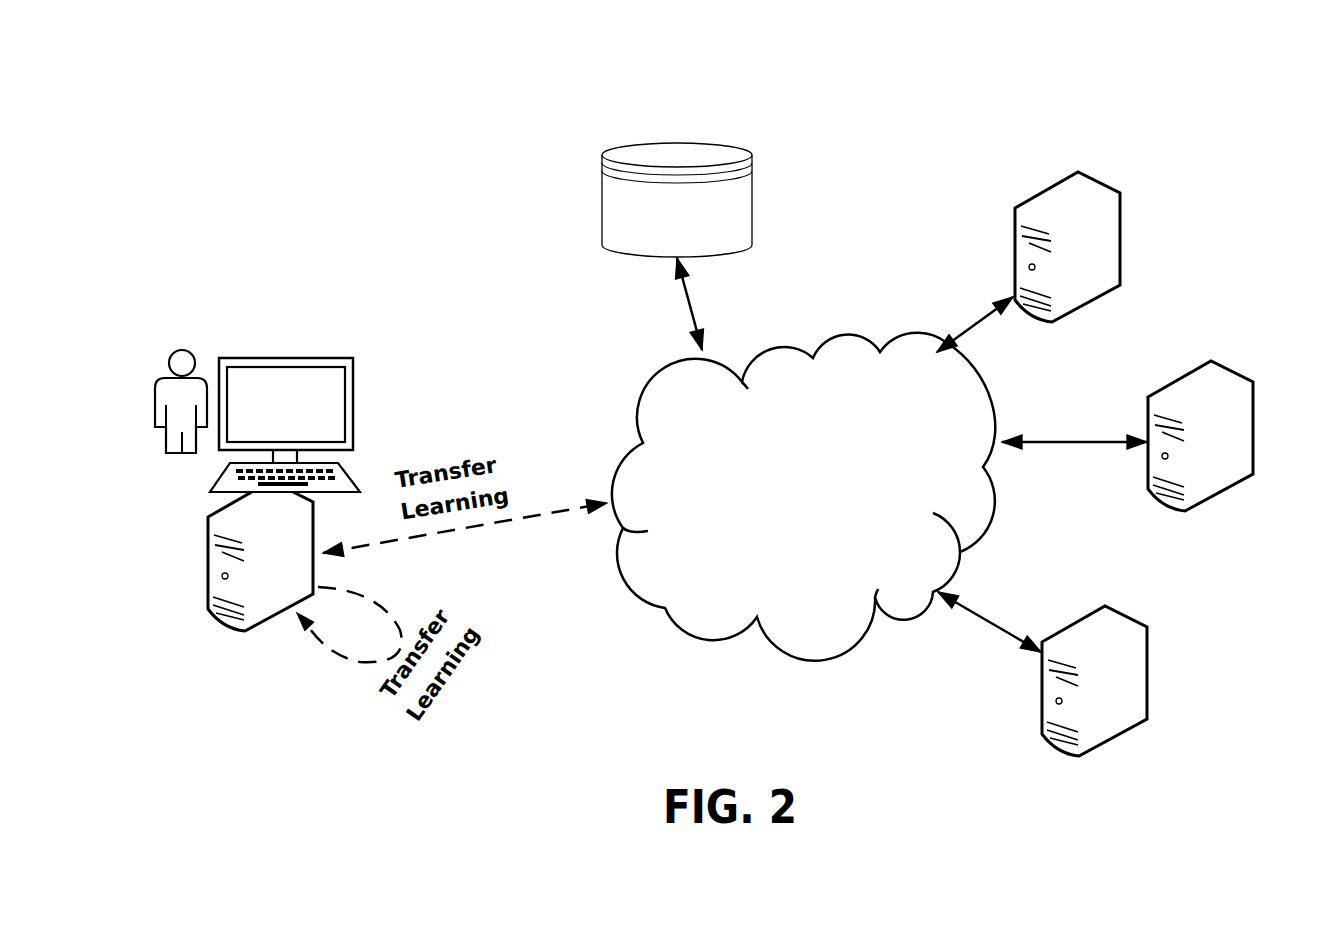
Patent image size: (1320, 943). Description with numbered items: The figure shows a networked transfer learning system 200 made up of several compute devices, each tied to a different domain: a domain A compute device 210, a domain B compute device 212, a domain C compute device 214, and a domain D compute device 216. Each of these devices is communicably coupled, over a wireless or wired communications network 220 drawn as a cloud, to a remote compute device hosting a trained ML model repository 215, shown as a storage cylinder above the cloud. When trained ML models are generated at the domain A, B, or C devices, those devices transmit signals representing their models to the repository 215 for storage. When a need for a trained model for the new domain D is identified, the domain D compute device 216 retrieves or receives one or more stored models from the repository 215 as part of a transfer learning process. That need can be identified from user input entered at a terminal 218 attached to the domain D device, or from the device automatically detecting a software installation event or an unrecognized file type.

The networked transfer learning system 200 is at (368, 197).
The domain A compute device 210 is at (1038, 199).
The domain B compute device 212 is at (1158, 379).
The domain C compute device 214 is at (1108, 674).
The trained ML model repository 215 is at (677, 185).
The domain D compute device 216 is at (240, 615).
The terminal 218 is at (254, 380).
The communications network 220 is at (803, 497).